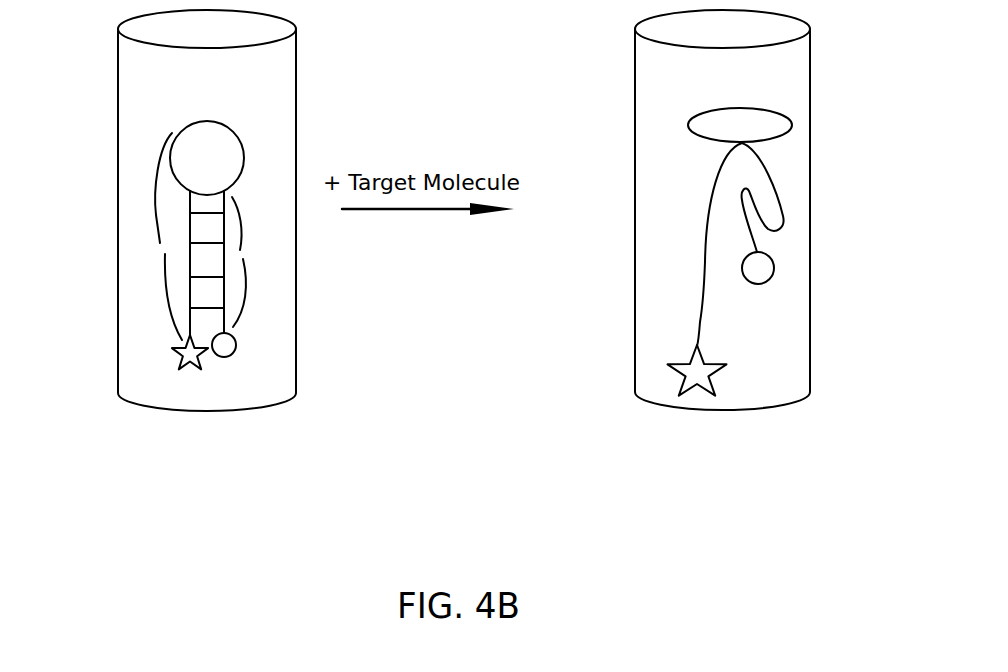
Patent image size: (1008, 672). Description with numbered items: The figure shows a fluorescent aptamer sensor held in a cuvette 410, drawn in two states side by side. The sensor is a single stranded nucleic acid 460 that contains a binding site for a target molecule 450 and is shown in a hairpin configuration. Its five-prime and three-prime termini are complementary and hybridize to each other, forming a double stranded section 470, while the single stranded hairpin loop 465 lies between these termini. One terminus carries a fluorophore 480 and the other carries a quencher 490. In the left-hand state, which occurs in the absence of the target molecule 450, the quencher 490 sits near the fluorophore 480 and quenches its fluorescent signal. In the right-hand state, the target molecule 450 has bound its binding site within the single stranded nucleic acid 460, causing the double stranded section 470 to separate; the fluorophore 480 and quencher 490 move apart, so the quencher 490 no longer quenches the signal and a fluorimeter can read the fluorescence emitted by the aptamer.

The cuvette 410 is at (122, 78).
The target molecule 450 is at (771, 111).
The single stranded nucleic acid 460 is at (164, 254).
The single stranded hairpin loop 465 is at (222, 124).
The double stranded section 470 is at (243, 259).
The fluorophore 480 is at (174, 357).
The quencher 490 is at (236, 345).